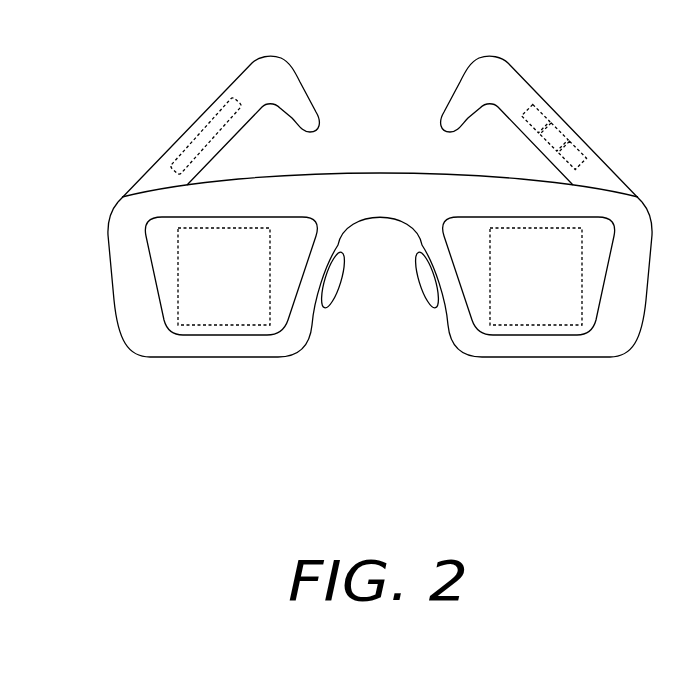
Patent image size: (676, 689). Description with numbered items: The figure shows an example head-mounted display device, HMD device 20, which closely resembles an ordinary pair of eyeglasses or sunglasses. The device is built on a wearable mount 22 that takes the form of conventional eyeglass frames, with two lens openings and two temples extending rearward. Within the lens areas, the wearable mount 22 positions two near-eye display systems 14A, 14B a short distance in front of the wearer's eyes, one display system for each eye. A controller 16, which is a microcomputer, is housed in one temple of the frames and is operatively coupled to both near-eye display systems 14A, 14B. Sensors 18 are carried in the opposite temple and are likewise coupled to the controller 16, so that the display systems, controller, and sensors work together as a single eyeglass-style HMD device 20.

The near-eye display system 14A is at (244, 288).
The near-eye display system 14B is at (556, 288).
The controller 16 is at (210, 120).
The sensors 18 is at (550, 87).
The HMD device 20 is at (345, 257).
The wearable mount 22 is at (108, 220).